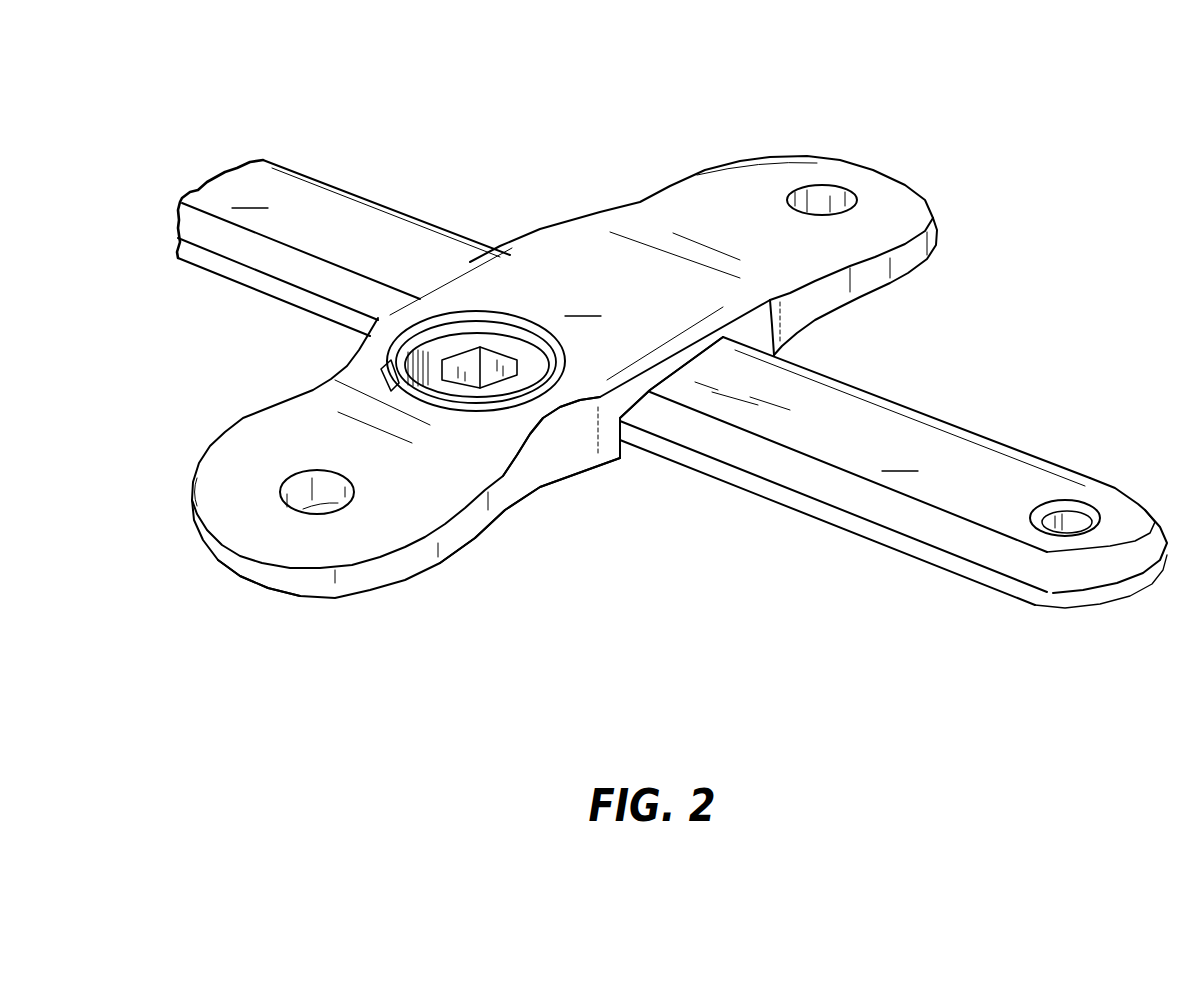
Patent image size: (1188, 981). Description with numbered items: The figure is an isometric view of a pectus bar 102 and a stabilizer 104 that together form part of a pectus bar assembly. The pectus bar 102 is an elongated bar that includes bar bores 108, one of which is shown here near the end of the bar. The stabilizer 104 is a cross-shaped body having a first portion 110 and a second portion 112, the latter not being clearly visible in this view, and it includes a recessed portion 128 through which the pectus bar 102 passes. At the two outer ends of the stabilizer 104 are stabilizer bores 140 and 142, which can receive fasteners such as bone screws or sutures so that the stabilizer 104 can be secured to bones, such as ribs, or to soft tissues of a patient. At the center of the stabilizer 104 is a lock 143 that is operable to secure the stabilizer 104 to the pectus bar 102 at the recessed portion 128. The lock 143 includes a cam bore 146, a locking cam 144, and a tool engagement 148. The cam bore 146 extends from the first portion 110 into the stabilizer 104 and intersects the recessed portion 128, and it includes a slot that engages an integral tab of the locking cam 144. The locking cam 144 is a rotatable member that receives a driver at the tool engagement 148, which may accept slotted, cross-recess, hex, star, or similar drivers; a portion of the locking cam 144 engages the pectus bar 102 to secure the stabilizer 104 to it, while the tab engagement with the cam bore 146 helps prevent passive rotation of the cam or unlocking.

The pectus bar 102 is at (672, 384).
The stabilizer 104 is at (266, 597).
The bar bores 108 is at (1059, 517).
The first portion 110 is at (564, 377).
The second portion 112 is at (507, 506).
The recessed portion 128 is at (632, 398).
The stabilizer bore 140 is at (296, 490).
The stabilizer bore 142 is at (824, 198).
The lock 143 is at (548, 430).
The locking cam 144 is at (440, 380).
The cam bore 146 is at (543, 328).
The tool engagement 148 is at (468, 347).